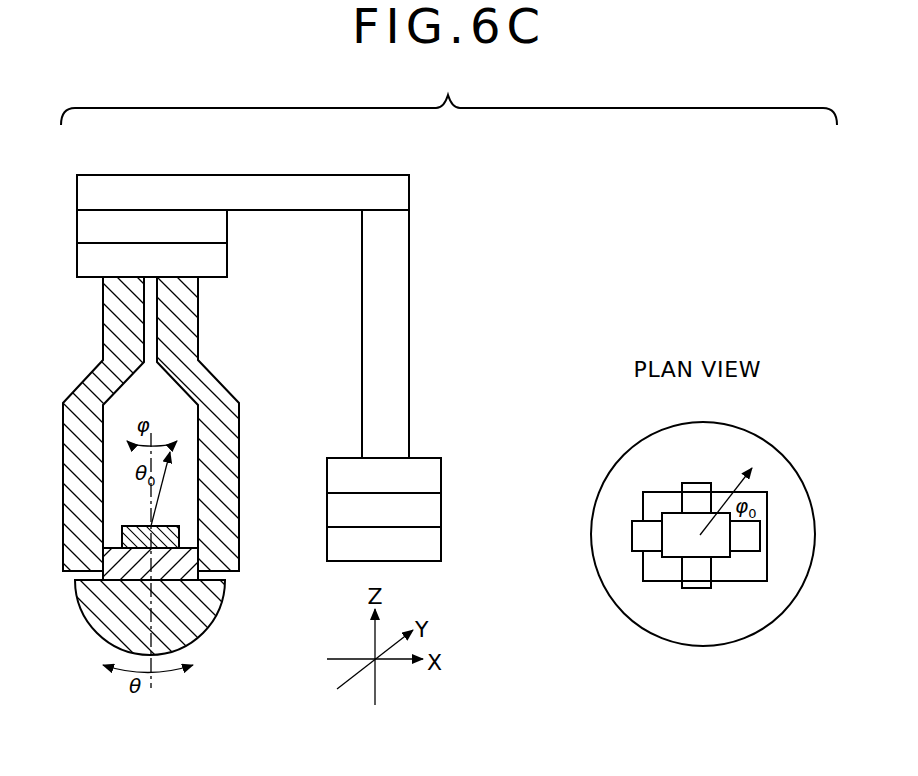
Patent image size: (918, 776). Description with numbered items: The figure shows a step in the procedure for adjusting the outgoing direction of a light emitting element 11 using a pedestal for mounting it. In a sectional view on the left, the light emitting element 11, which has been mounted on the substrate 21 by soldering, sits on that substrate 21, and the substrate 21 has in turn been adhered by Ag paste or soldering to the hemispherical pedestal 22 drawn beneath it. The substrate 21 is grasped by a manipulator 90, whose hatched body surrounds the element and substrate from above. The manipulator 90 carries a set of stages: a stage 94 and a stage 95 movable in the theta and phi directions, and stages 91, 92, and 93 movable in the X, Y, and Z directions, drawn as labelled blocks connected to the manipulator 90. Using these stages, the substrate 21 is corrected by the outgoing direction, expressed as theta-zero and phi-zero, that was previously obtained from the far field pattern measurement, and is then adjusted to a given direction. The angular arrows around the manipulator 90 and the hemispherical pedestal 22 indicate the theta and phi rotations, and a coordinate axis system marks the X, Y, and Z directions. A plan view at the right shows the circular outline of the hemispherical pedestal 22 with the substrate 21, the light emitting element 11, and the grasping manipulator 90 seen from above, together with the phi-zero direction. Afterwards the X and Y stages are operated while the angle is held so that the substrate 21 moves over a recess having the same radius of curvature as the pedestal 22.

The light emitting element 11 is at (177, 531).
The substrate 21 is at (183, 565).
The hemispherical pedestal 22 is at (203, 618).
The manipulator 90 is at (182, 332).
The X stage 91 is at (441, 475).
The Y stage 92 is at (441, 510).
The Z stage 93 is at (441, 544).
The theta stage 94 is at (227, 229).
The phi stage 95 is at (227, 262).